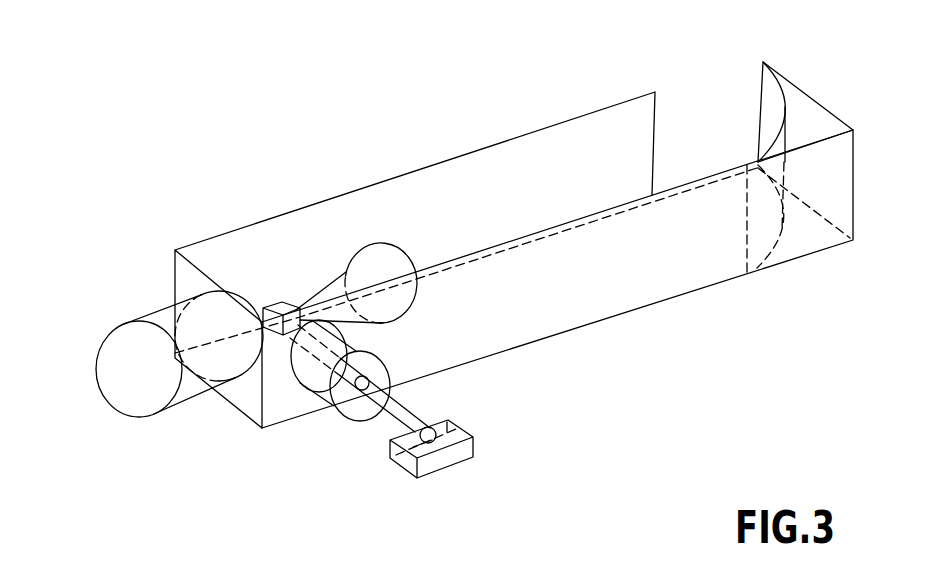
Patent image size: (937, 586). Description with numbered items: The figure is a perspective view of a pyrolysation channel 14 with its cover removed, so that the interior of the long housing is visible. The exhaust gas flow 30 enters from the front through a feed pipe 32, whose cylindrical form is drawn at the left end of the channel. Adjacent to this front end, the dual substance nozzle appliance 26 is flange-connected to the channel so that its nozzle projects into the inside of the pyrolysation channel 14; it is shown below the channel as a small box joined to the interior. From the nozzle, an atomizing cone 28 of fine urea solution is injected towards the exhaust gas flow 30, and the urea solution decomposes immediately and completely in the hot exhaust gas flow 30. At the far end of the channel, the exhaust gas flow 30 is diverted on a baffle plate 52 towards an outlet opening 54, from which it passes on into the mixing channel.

The pyrolysation channel 14 is at (224, 472).
The dual substance nozzle appliance 26 is at (443, 463).
The atomizing cone 28 is at (338, 276).
The exhaust gas flow 30 is at (78, 389).
The feed pipe 32 is at (152, 318).
The baffle plate 52 is at (785, 107).
The outlet opening 54 is at (712, 82).